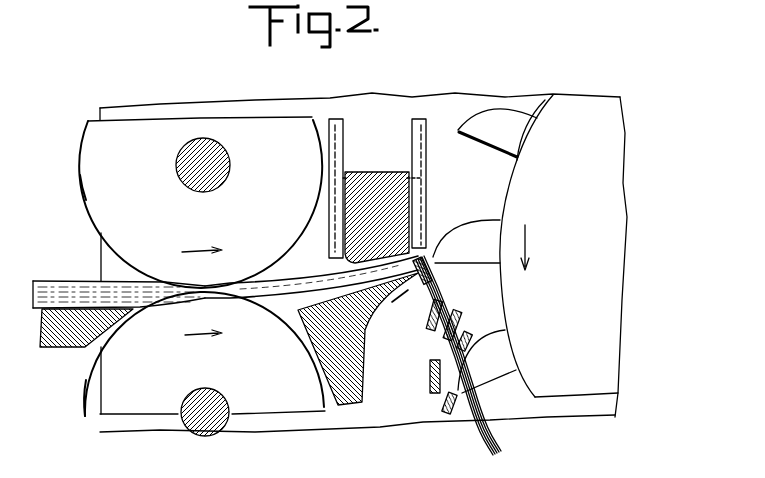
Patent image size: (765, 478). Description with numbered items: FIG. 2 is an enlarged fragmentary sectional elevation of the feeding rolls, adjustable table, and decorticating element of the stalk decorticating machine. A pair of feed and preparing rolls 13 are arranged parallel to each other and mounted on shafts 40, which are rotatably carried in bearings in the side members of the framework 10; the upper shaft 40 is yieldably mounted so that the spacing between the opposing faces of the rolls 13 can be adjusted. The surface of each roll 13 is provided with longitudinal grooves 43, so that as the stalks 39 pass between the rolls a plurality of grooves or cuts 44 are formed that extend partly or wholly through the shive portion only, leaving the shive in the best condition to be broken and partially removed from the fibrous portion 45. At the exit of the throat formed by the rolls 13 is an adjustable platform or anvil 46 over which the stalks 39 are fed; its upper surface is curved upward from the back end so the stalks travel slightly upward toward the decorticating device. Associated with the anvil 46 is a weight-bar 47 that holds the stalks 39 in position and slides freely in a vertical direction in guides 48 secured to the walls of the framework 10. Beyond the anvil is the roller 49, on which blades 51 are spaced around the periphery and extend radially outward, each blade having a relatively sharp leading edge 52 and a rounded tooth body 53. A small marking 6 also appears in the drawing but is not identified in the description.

The teeth 6 is at (393, 308).
The framework 10 is at (508, 100).
The feed and preparing rolls 13 is at (93, 192).
The stalks 39 is at (48, 285).
The shafts 40 is at (207, 143).
The longitudinal grooves 43 is at (80, 157).
The grooves or cuts 44 is at (290, 280).
The fibrous portion 45 is at (497, 438).
The adjustable platform or anvil 46 is at (367, 325).
The weight-bar 47 is at (378, 180).
The guides 48 is at (338, 123).
The roller 49 is at (615, 132).
The blades 51 is at (517, 122).
The leading edge 52 is at (481, 146).
The rounded body of the teeth 53 is at (488, 112).